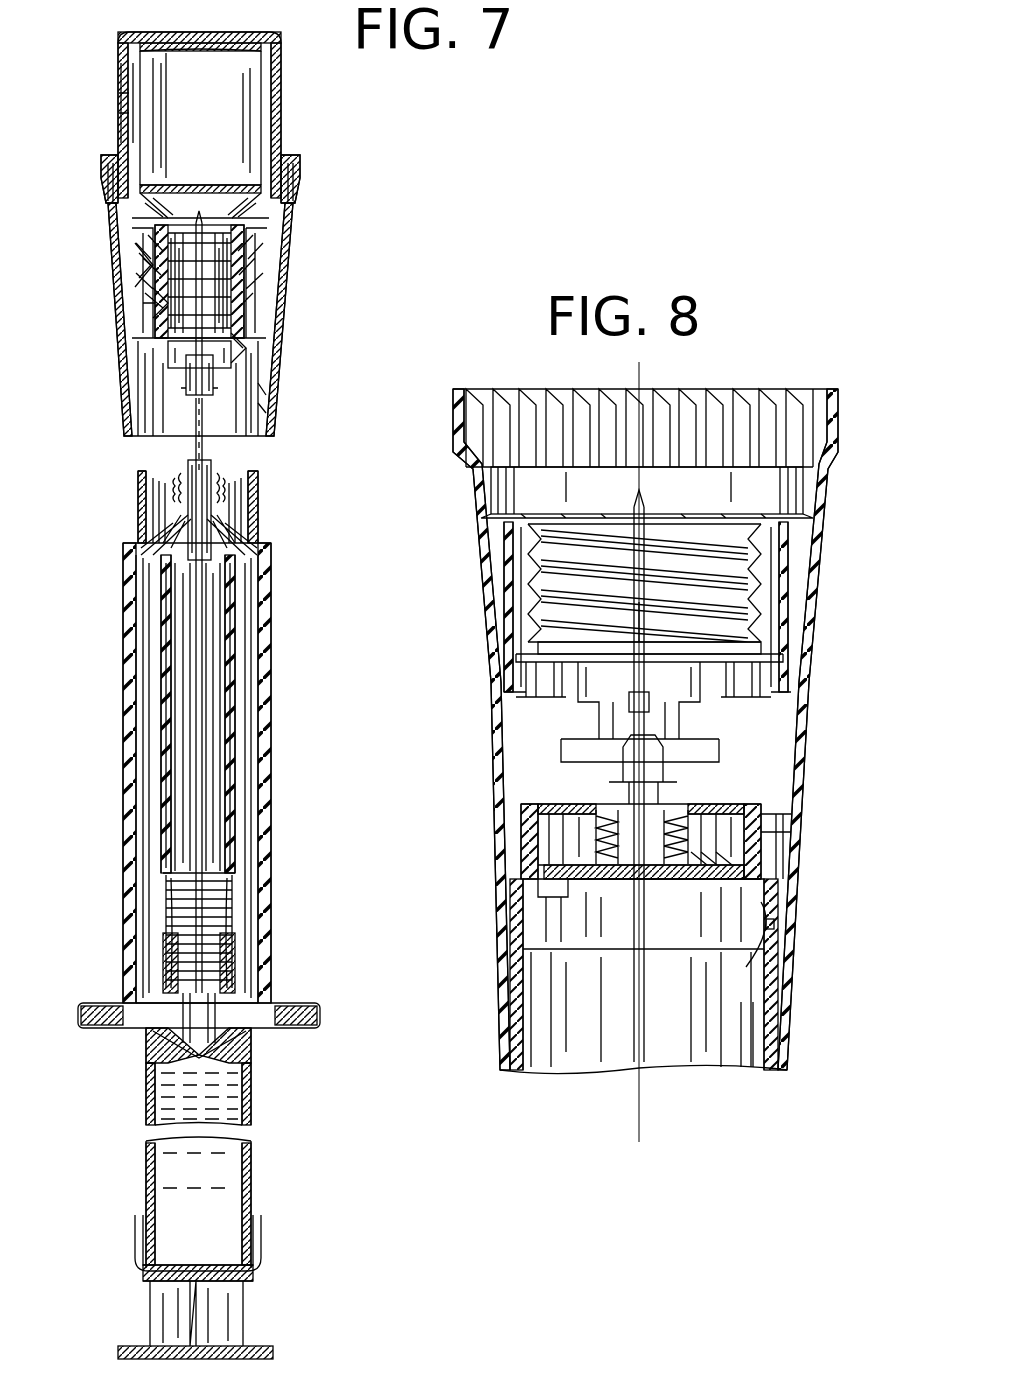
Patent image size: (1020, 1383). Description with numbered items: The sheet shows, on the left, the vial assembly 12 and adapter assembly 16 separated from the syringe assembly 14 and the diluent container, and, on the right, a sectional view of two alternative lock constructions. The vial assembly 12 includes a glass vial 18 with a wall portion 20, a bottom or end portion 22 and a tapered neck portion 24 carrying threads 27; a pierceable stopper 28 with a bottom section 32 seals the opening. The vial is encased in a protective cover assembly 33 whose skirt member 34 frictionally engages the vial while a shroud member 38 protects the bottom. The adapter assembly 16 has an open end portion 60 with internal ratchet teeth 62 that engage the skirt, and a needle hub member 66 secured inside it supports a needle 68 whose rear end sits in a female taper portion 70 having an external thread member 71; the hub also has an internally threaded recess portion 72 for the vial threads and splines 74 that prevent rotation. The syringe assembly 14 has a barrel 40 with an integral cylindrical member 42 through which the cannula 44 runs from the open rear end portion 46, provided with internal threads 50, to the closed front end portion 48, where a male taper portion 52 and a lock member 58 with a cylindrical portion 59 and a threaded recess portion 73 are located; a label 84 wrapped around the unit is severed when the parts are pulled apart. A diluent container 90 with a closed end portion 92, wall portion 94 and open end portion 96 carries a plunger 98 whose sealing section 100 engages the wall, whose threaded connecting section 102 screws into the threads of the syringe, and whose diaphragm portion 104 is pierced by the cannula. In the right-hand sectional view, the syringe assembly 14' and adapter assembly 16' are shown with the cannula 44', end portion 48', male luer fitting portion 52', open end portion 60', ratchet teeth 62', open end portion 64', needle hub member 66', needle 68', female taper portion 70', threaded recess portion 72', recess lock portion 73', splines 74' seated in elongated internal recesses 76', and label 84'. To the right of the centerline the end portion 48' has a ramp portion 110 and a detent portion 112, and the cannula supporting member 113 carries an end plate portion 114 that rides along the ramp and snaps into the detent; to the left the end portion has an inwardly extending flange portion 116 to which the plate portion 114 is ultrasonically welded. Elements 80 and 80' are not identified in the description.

In FIG. 7, the vial assembly 12 is at (282, 113).
In FIG. 7, the syringe assembly 14 is at (226, 773).
In FIG. 7, the adapter assembly 16 is at (229, 319).
In FIG. 7, the glass vial 18 is at (268, 136).
In FIG. 7, the wall portion 20 is at (272, 88).
In FIG. 7, the bottom or end portion 22 is at (212, 42).
In FIG. 7, the tapered neck portion 24 is at (245, 282).
In FIG. 7, the threads 27 is at (132, 262).
In FIG. 7, the pierceable stopper 28 is at (240, 302).
In FIG. 7, the bottom section 32 is at (245, 255).
In FIG. 7, the protective cover assembly 33 is at (113, 96).
In FIG. 7, the skirt member 34 is at (276, 190).
In FIG. 7, the shroud member 38 is at (120, 80).
In FIG. 7, the outer housing or barrel 40 is at (262, 748).
In FIG. 7, the cylindrical member 42 is at (162, 606).
In FIG. 7, the cannula 44 is at (252, 695).
In FIG. 7, the open rear end portion 46 is at (142, 986).
In FIG. 7, the closed front end portion 48 is at (263, 538).
In FIG. 7, the internal threads 50 is at (222, 876).
In FIG. 7, the male taper portion 52 is at (143, 509).
In FIG. 7, the lock member 58 is at (138, 553).
In FIG. 7, the cylindrical portion 59 is at (258, 508).
In FIG. 8, the cylindrical portion 59 is at (762, 812).
In FIG. 7, the open end portion 60 is at (77, 172).
In FIG. 7, the ratchet teeth 62 is at (316, 179).
In FIG. 7, the needle hub member 66 is at (166, 354).
In FIG. 7, the needle or cannula member 68 is at (276, 345).
In FIG. 7, the female taper portion 70 is at (144, 387).
In FIG. 7, the external thread member 71 is at (262, 390).
In FIG. 7, the internally threaded recess portion 72 is at (107, 278).
In FIG. 7, the internally threaded recess portion 73 is at (236, 480).
In FIG. 7, the splines 74 is at (290, 278).
In FIG. 7, the detent 80 is at (109, 306).
In FIG. 7, the label 84 is at (238, 468).
In FIG. 7, the diluent containing container 90 is at (252, 1145).
In FIG. 7, the closed end portion 92 is at (250, 1270).
In FIG. 7, the wall portion 94 is at (248, 1108).
In FIG. 7, the open end portion 96 is at (142, 1028).
In FIG. 7, the pierceable stopper or plunger 98 is at (226, 970).
In FIG. 7, the sealing section 100 is at (236, 1040).
In FIG. 7, the threaded connecting section 102 is at (226, 906).
In FIG. 7, the diaphragm portion 104 is at (172, 950).
In FIG. 8, the syringe assembly 14' is at (688, 1031).
In FIG. 8, the adapter assembly 16' is at (664, 729).
In FIG. 8, the cannula 44' is at (699, 974).
In FIG. 8, the end portion 48' is at (600, 923).
In FIG. 8, the male luer fitting portion 52' is at (721, 776).
In FIG. 8, the open end portion 60' is at (686, 456).
In FIG. 8, the ratchet teeth 62' is at (645, 403).
In FIG. 8, the open end portion 64' is at (780, 1060).
In FIG. 8, the needle hub member 66' is at (581, 712).
In FIG. 8, the needle or cannula member 68' is at (786, 607).
In FIG. 8, the female taper portion 70' is at (525, 827).
In FIG. 8, the internally threaded recess portion 72' is at (485, 607).
In FIG. 8, the recess lock portion 73' is at (598, 834).
In FIG. 8, the splines 74' is at (696, 583).
In FIG. 8, the elongated internal recesses 76' is at (614, 679).
In FIG. 8, the detent 80' is at (610, 642).
In FIG. 8, the label 84' is at (607, 974).
In FIG. 8, the ramp portion 110 is at (762, 926).
In FIG. 8, the detent portion 112 is at (702, 870).
In FIG. 8, the cannula supporting member 113 is at (700, 846).
In FIG. 8, the end plate or portion 114 is at (722, 866).
In FIG. 8, the inwardly extending flange portion 116 is at (560, 886).